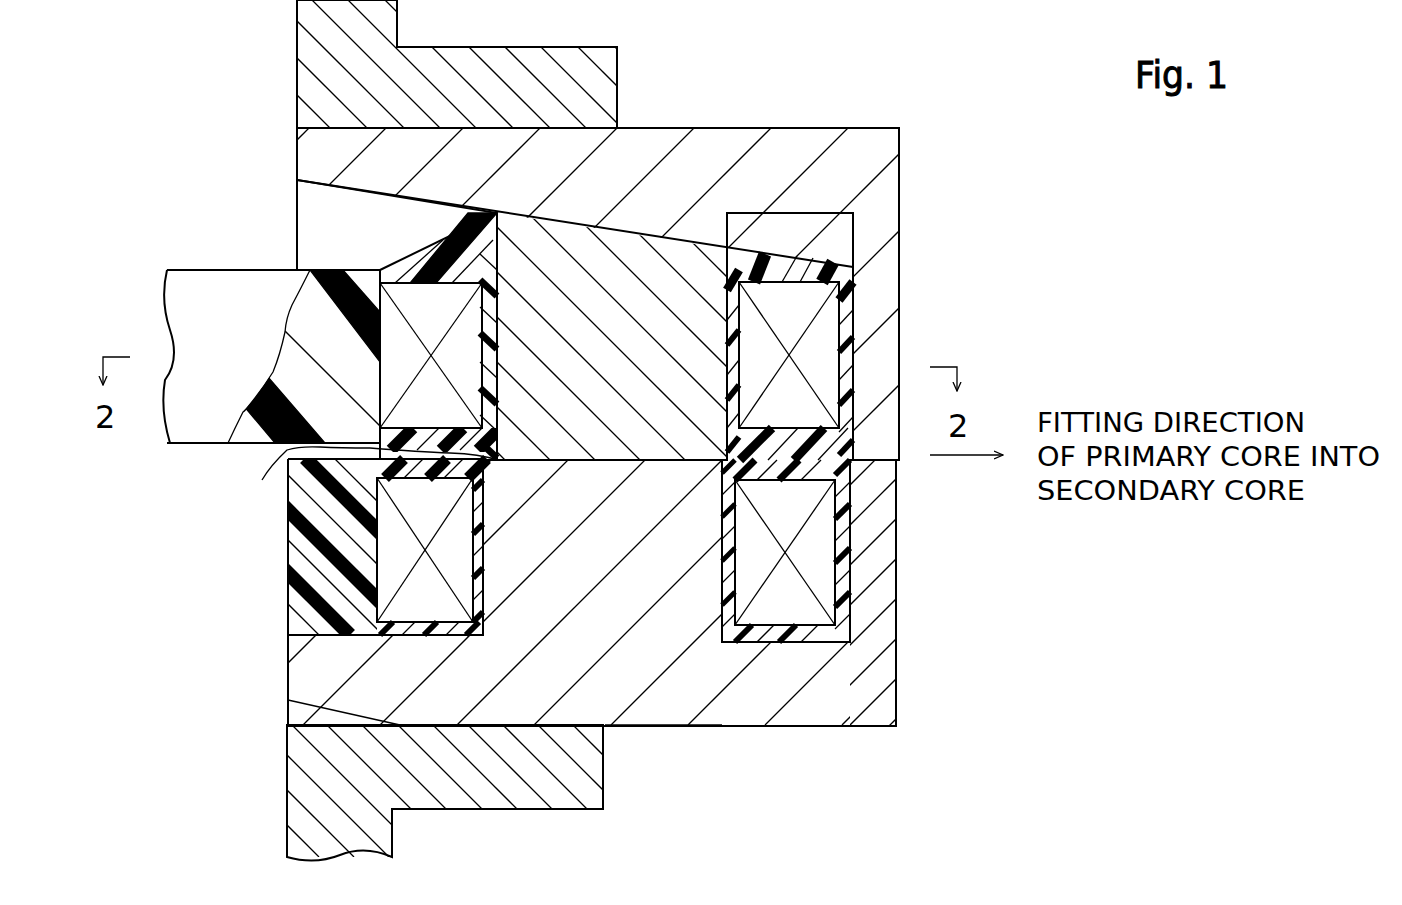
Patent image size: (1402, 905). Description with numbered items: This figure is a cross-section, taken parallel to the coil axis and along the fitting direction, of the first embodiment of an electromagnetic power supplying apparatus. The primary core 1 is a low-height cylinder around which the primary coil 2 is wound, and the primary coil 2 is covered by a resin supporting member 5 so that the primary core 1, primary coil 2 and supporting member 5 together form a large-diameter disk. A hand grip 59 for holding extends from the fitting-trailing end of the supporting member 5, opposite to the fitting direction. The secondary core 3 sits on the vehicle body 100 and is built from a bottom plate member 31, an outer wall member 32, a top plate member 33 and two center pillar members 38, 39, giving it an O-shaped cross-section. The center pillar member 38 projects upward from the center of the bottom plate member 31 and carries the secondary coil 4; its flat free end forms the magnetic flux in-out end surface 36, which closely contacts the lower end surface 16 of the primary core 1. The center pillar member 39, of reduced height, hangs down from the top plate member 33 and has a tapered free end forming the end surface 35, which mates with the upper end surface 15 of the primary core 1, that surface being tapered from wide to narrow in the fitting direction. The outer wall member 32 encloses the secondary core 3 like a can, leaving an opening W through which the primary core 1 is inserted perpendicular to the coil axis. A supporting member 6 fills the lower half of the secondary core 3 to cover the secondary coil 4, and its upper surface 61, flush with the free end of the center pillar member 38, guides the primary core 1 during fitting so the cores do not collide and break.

The primary core 1 is at (610, 287).
The primary coil 2 is at (818, 347).
The secondary core 3 is at (632, 723).
The secondary coil 4 is at (777, 612).
The supporting member 5 is at (455, 255).
The supporting member 6 is at (308, 543).
The magnetic flux in-out end surface 15 is at (510, 215).
The magnetic flux in-out end surface 16 is at (572, 470).
The bottom plate member 31 is at (365, 702).
The outer wall member 32 is at (873, 566).
The top plate member 33 is at (802, 166).
The magnetic flux in-out end surface 35 is at (693, 245).
The magnetic flux in-out end surface 36 is at (630, 458).
The center pillar member 38 is at (680, 548).
The center pillar member 39 is at (708, 238).
The hand grip 59 is at (193, 292).
The upper surface 61 is at (363, 476).
The vehicle body 100 is at (477, 83).
The opening W is at (293, 232).